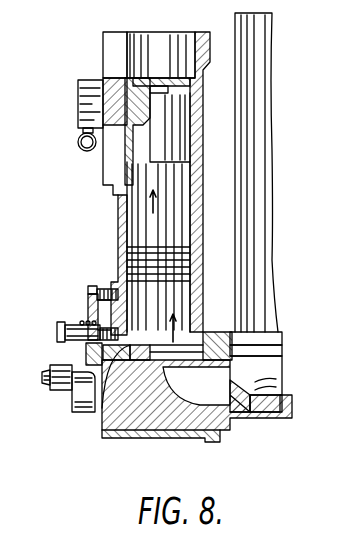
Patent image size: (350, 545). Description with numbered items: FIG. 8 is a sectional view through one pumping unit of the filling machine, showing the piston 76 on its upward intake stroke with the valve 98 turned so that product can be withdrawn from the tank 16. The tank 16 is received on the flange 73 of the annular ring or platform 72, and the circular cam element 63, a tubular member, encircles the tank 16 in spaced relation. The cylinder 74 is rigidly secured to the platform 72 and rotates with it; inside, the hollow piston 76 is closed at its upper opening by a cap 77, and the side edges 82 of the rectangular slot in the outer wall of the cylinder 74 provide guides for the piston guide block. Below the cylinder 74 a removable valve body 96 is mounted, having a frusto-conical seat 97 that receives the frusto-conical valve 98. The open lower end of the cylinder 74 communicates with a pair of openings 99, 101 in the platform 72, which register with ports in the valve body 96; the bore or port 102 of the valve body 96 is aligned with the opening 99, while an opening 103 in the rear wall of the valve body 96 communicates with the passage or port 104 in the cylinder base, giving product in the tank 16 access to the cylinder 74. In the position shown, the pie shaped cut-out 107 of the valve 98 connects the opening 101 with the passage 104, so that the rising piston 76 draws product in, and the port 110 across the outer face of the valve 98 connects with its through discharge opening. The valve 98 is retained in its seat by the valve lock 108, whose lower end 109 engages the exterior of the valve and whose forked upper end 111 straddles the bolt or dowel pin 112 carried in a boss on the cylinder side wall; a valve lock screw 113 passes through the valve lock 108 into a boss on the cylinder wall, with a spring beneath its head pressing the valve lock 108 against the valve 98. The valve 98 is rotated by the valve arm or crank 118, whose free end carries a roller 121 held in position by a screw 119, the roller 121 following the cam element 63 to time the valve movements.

The tank 16 is at (258, 48).
The side edges 82 is at (115, 55).
The cap 77 is at (160, 84).
The cylinder 74 is at (196, 290).
The piston 76 is at (141, 204).
The cam element 63 is at (82, 152).
The bolt or dowel pin 112 is at (97, 294).
The forked upper end 111 is at (93, 286).
The valve lock 108 is at (95, 320).
The valve lock screw 113 is at (74, 325).
The lower end of valve lock 109 is at (100, 362).
The valve body 96 is at (174, 442).
The flange 73 is at (247, 337).
The annular ring or platform 72 is at (252, 350).
The passage or port 104 is at (256, 384).
The rear wall opening 103 is at (245, 428).
The pie shaped cut-out 107 is at (197, 402).
The bore or port 102 is at (138, 440).
The frusto-conical seat 97 is at (113, 440).
The valve 98 is at (100, 430).
The port 110 is at (103, 399).
The screw 119 is at (47, 377).
The roller 121 is at (62, 394).
The valve arm or crank 118 is at (80, 404).
The opening or port 99 is at (139, 345).
The opening or port 101 is at (170, 343).